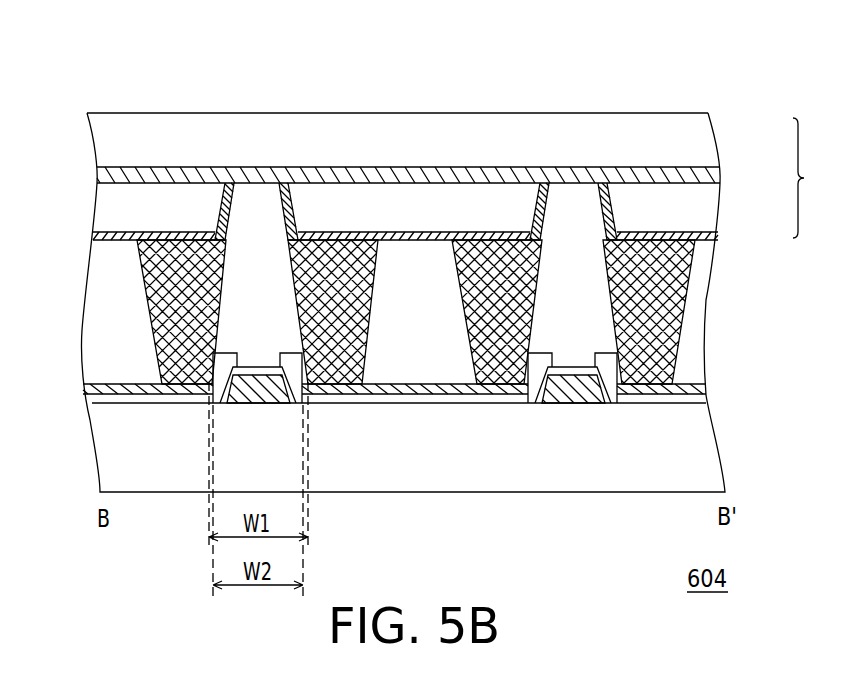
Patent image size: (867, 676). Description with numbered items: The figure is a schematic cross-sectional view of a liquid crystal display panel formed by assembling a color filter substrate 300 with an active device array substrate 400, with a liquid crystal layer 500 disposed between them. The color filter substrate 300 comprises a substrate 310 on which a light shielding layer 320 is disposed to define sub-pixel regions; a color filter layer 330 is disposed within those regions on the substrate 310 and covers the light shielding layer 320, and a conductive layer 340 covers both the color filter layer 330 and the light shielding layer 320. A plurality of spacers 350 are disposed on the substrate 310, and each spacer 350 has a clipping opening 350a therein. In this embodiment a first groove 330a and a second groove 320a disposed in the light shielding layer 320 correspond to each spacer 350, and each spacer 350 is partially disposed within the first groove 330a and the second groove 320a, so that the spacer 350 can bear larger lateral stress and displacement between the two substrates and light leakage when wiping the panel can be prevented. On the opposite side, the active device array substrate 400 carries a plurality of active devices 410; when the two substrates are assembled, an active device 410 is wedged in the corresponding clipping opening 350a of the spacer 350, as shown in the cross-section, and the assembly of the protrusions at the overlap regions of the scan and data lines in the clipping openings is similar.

The color filter substrate 300 is at (821, 178).
The substrate 310 is at (700, 138).
The light shielding layer 320 is at (118, 177).
The second groove 320a is at (262, 168).
The color filter layer 330 is at (418, 210).
The first groove 330a is at (230, 214).
The conductive layer 340 is at (708, 237).
The spacer 350 is at (160, 281).
The clipping opening 350a is at (226, 341).
The active device array substrate 400 is at (703, 448).
The active device 410 is at (320, 418).
The liquid crystal layer 500 is at (113, 366).